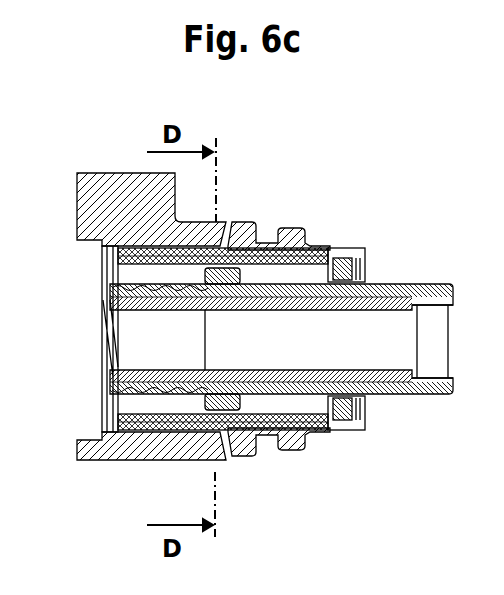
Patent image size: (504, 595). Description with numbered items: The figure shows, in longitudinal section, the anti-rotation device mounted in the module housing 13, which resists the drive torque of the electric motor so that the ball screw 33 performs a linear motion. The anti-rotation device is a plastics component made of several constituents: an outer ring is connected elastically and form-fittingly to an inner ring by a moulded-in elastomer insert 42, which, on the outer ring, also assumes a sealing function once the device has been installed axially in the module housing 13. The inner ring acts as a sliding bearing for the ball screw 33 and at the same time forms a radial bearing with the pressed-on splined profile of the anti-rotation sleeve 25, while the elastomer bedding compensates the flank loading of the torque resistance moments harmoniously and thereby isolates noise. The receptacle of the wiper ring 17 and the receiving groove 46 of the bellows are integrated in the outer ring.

The module housing 13 is at (121, 180).
The receiving groove 46 is at (267, 245).
The wiper ring 17 is at (345, 256).
The ball screw 33 is at (381, 298).
The anti-rotation sleeve 25 is at (428, 290).
The elastomer insert 42 is at (157, 443).